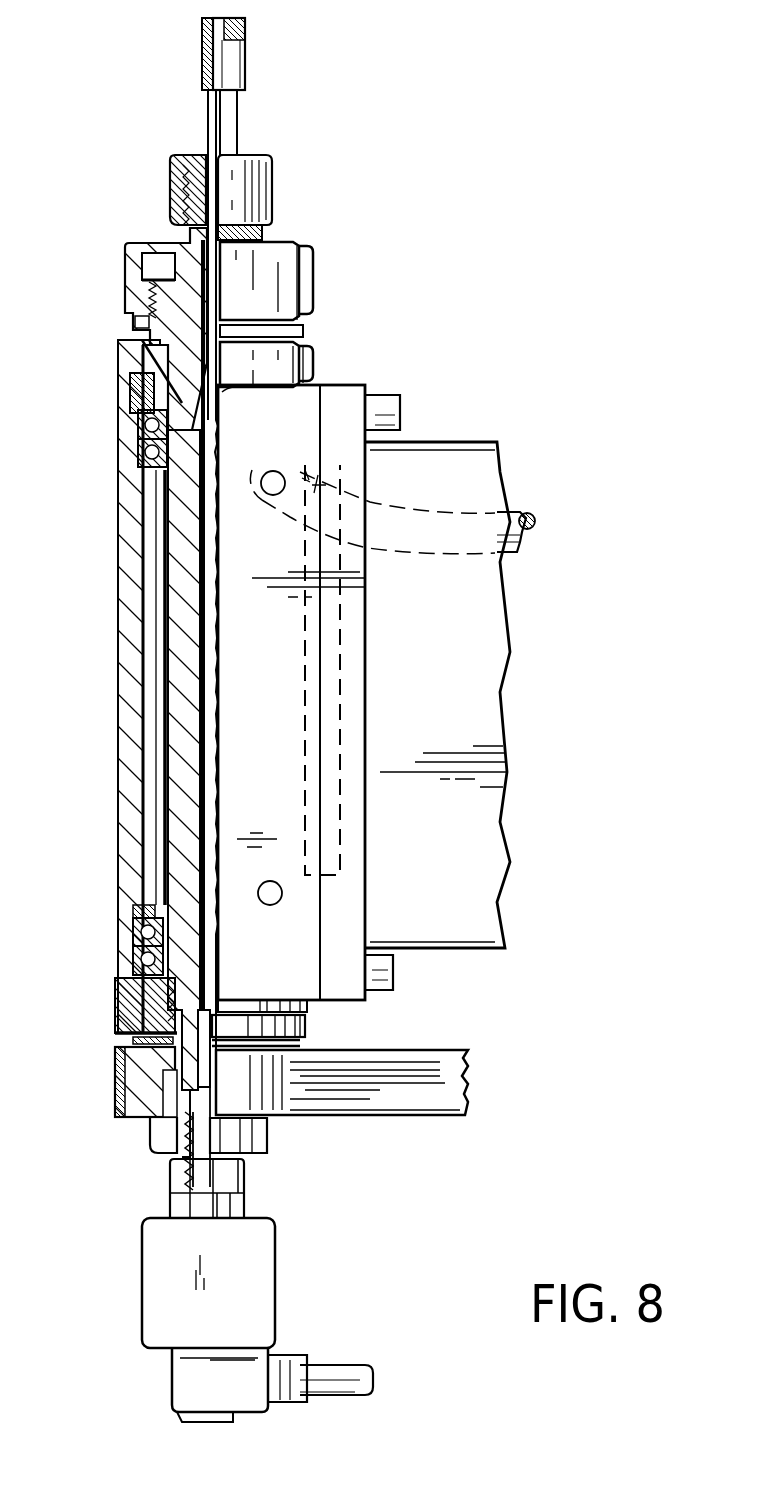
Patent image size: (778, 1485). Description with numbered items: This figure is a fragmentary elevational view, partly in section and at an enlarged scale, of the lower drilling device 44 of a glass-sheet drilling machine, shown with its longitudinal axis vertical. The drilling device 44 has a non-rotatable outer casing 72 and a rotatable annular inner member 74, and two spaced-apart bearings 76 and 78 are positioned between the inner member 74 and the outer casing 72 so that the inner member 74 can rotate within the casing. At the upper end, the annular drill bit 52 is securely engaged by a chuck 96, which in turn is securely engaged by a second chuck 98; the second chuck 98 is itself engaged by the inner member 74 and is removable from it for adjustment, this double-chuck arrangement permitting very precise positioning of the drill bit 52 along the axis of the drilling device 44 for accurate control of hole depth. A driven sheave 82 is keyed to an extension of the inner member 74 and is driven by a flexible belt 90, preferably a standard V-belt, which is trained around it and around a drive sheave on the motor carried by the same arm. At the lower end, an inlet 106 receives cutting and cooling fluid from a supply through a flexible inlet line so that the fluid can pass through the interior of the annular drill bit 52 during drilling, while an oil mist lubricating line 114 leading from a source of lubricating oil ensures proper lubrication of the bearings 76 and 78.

The drill bit 52 is at (204, 35).
The chuck 96 is at (180, 170).
The second chuck 98 is at (138, 322).
The bearing 76 is at (145, 456).
The inner member 74 is at (183, 572).
The outer casing 72 is at (150, 633).
The second drilling device 44 is at (118, 710).
The bearing 78 is at (140, 952).
The driven sheave 82 is at (143, 1122).
The inlet 106 is at (180, 1290).
The flexible belt 90 is at (447, 1062).
The oil mist lubricating line 114 is at (510, 522).